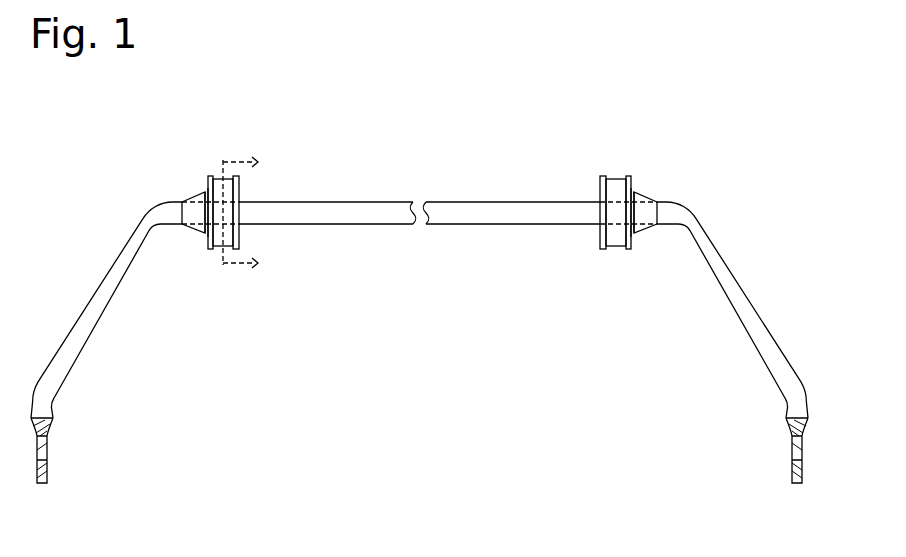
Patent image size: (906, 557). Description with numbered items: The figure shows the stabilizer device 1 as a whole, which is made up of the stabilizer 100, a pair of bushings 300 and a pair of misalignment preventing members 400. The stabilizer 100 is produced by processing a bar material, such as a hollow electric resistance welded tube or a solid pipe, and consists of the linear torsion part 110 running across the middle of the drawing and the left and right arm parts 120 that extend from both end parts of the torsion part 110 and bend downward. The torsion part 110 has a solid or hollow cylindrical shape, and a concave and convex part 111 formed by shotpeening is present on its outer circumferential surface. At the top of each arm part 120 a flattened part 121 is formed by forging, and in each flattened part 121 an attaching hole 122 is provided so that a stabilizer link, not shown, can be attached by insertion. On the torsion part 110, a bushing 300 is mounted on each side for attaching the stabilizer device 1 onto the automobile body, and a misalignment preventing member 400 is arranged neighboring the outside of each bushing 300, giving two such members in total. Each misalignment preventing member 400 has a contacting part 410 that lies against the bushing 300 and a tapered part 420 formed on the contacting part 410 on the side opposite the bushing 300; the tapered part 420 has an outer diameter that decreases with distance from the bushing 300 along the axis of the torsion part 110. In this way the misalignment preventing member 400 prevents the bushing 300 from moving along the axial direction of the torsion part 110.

The stabilizer device 1 is at (430, 151).
The stabilizer 100 is at (537, 199).
The torsion part 110 is at (492, 205).
The concave and convex part 111 is at (320, 201).
The arm part 120 is at (92, 300).
The flattened part 121 is at (47, 442).
The attaching hole 122 is at (46, 468).
The bushing 300 is at (218, 250).
The misalignment preventing member 400 is at (207, 137).
The contacting part 410 is at (207, 190).
The tapered part 420 is at (197, 193).